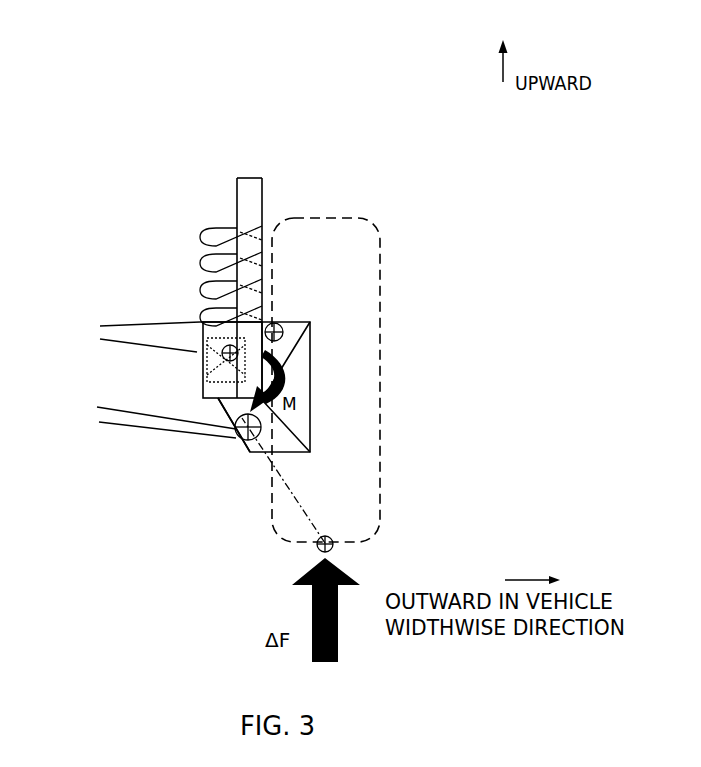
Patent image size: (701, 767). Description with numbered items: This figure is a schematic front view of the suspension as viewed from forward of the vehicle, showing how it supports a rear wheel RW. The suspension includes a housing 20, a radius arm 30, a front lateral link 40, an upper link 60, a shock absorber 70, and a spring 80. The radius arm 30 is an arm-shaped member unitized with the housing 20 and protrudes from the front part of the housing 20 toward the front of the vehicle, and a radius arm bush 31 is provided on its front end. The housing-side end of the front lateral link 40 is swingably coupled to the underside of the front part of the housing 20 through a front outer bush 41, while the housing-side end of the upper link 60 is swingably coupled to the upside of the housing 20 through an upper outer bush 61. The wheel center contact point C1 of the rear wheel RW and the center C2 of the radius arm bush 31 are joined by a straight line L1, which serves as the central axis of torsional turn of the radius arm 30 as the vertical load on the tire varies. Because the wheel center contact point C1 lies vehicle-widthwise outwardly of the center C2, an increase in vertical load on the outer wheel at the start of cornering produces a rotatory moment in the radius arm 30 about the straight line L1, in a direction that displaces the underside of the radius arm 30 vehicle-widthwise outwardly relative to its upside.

The housing 20 is at (310, 380).
The radius arm 30 is at (218, 398).
The radius arm bush 31 is at (197, 352).
The front lateral link 40 is at (133, 425).
The front outer bush 41 is at (262, 431).
The upper link 60 is at (139, 325).
The upper outer bush 61 is at (284, 330).
The shock absorber 70 is at (262, 178).
The spring 80 is at (222, 237).
The rear wheel RW is at (382, 262).
The wheel center contact point C1 is at (345, 540).
The center of the radius arm bush C2 is at (222, 356).
The straight line L1 is at (284, 490).